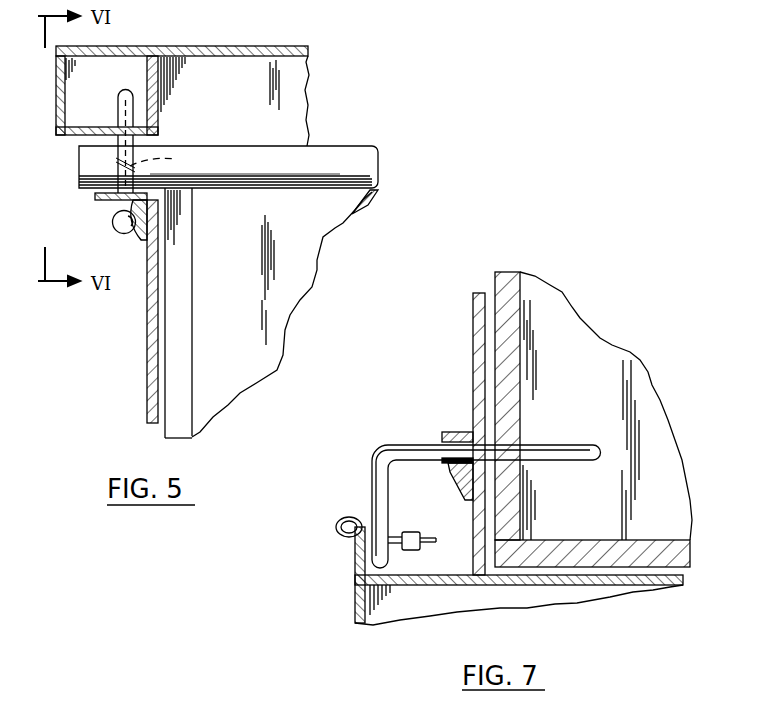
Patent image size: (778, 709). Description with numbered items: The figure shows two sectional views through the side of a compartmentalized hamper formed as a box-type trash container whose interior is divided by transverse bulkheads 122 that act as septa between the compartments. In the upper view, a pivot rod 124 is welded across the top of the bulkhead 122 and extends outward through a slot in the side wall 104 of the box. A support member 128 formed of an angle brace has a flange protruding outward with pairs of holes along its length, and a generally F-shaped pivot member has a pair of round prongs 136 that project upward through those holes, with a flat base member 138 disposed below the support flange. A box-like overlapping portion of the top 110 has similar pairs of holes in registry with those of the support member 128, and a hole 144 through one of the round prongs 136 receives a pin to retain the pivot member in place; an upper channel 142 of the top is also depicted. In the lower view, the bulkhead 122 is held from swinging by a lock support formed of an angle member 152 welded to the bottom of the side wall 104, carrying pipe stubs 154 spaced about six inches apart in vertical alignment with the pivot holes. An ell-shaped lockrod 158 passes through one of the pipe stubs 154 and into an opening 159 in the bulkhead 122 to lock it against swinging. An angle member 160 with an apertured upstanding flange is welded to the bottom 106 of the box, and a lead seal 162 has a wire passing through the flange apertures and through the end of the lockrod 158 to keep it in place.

In FIG. 5, the side wall 104 is at (147, 370).
In FIG. 7, the bottom 106 is at (457, 587).
In FIG. 5, the top 110 is at (157, 70).
In FIG. 5, the transverse bulkhead 122 is at (318, 282).
In FIG. 7, the transverse bulkhead 122 is at (572, 307).
In FIG. 5, the pivot rod 124 is at (233, 147).
In FIG. 5, the support member 128 is at (140, 235).
In FIG. 5, the round prong 136 is at (118, 100).
In FIG. 5, the flat base member 138 is at (112, 221).
In FIG. 5, the channel member 142 is at (122, 46).
In FIG. 5, the hole 144 is at (169, 158).
In FIG. 7, the angle member 152 is at (465, 480).
In FIG. 7, the pipe stub 154 is at (452, 432).
In FIG. 7, the ell-shaped lockrod 158 is at (372, 470).
In FIG. 7, the opening 159 is at (525, 470).
In FIG. 7, the angle member 160 is at (355, 561).
In FIG. 7, the lead seal 162 is at (418, 548).